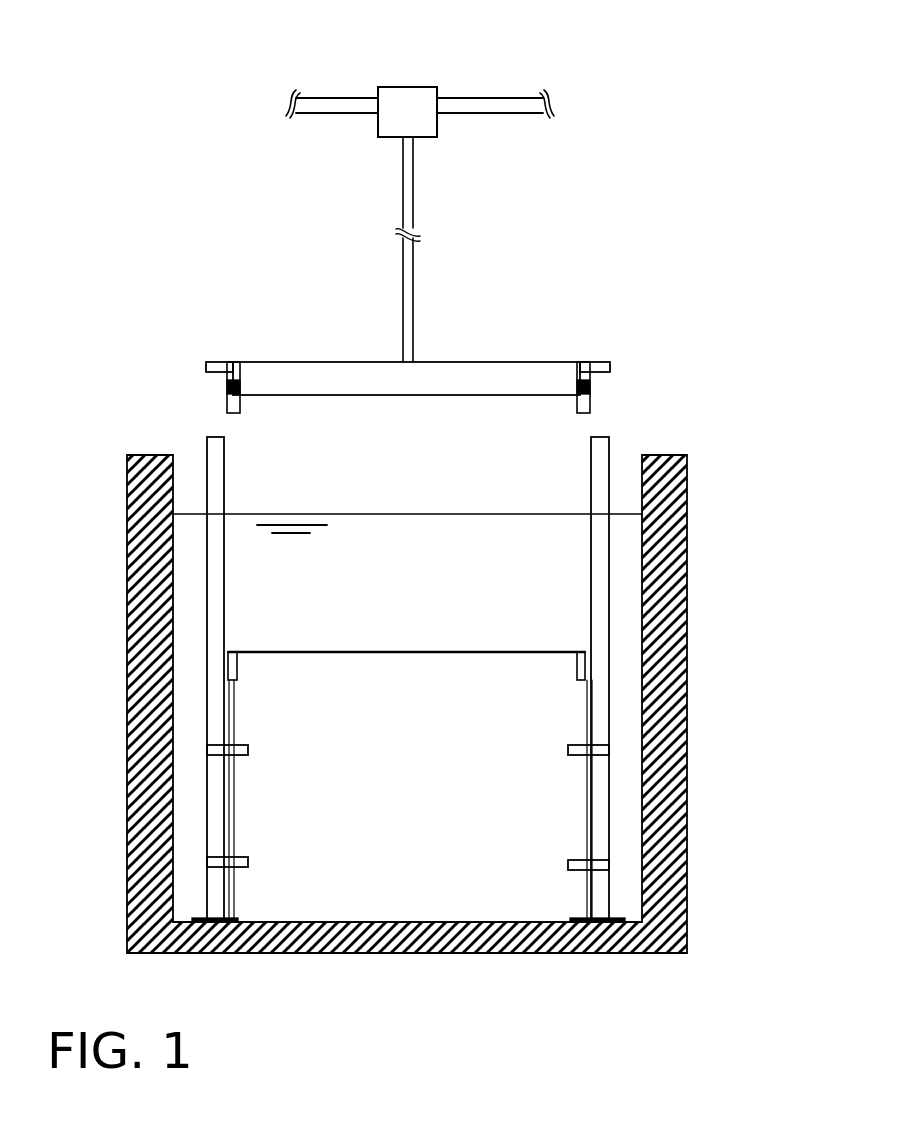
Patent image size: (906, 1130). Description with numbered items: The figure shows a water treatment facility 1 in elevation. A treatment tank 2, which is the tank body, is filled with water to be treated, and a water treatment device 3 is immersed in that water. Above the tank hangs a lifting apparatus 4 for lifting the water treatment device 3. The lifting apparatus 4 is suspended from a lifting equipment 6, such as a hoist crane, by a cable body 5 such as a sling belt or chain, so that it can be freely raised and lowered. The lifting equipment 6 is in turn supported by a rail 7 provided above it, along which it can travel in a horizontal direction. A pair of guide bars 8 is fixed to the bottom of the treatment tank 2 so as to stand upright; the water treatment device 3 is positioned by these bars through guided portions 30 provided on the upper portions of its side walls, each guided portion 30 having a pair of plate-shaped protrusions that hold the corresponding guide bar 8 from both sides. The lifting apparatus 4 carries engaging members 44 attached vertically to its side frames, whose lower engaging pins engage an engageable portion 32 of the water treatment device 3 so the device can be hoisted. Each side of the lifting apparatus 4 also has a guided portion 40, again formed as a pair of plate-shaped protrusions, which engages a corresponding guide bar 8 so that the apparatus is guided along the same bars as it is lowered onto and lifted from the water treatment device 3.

The water treatment facility 1 is at (193, 139).
The treatment tank 2 is at (718, 458).
The water treatment device 3 is at (413, 808).
The lifting apparatus 4 is at (506, 362).
The cable body 5 is at (413, 296).
The lifting equipment 6 is at (416, 87).
The rail 7 is at (473, 98).
The guide bars 8 is at (224, 488).
The guided portions 30 is at (207, 750).
The engageable portion 32 is at (230, 652).
The guided portion 40 is at (226, 362).
The engaging members 44 is at (224, 402).